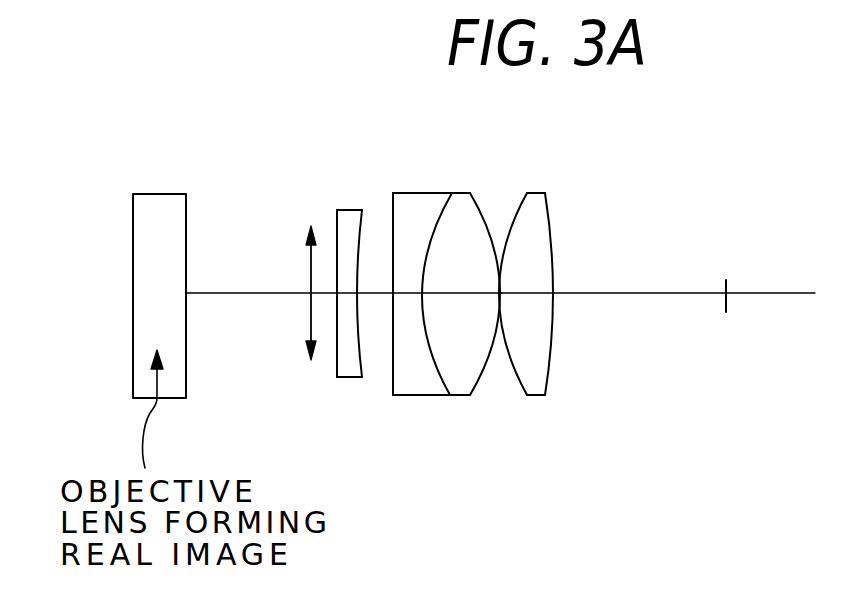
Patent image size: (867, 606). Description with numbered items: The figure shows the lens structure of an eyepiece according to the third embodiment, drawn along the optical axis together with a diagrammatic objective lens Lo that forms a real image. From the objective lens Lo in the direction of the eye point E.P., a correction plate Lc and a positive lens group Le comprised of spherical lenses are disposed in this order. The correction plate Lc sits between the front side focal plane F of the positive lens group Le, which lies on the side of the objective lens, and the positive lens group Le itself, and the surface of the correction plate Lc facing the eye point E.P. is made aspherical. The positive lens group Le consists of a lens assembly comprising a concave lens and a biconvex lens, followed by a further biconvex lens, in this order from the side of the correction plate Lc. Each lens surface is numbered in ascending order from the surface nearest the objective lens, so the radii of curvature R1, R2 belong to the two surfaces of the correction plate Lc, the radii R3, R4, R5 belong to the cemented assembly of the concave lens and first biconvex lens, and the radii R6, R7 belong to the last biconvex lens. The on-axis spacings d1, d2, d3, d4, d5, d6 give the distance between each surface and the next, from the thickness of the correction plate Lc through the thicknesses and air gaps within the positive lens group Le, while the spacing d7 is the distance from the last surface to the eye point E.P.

The objective lens Lo is at (157, 203).
The correction plate Lc is at (331, 291).
The positive lens group Le is at (502, 296).
The front side focal plane F is at (311, 320).
The radius of curvature of the first surface R1 is at (333, 372).
The radius of curvature of the second surface R2 is at (365, 370).
The radius of curvature of the third surface R3 is at (393, 376).
The radius of curvature of the fourth surface R4 is at (442, 380).
The radius of curvature of the fifth surface R5 is at (475, 383).
The radius of curvature of the sixth surface R6 is at (518, 380).
The radius of curvature of the seventh surface R7 is at (548, 387).
The spacing between the first and second surfaces d1 is at (348, 293).
The spacing between the second and third surfaces d2 is at (375, 276).
The spacing between the third and fourth surfaces d3 is at (410, 293).
The spacing between the fourth and fifth surfaces d4 is at (461, 276).
The spacing between the fifth and sixth surfaces d5 is at (500, 295).
The spacing between the sixth and seventh surfaces d6 is at (526, 276).
The spacing between the seventh surface and the eye point d7 is at (639, 276).
The eye point E.P. is at (730, 276).